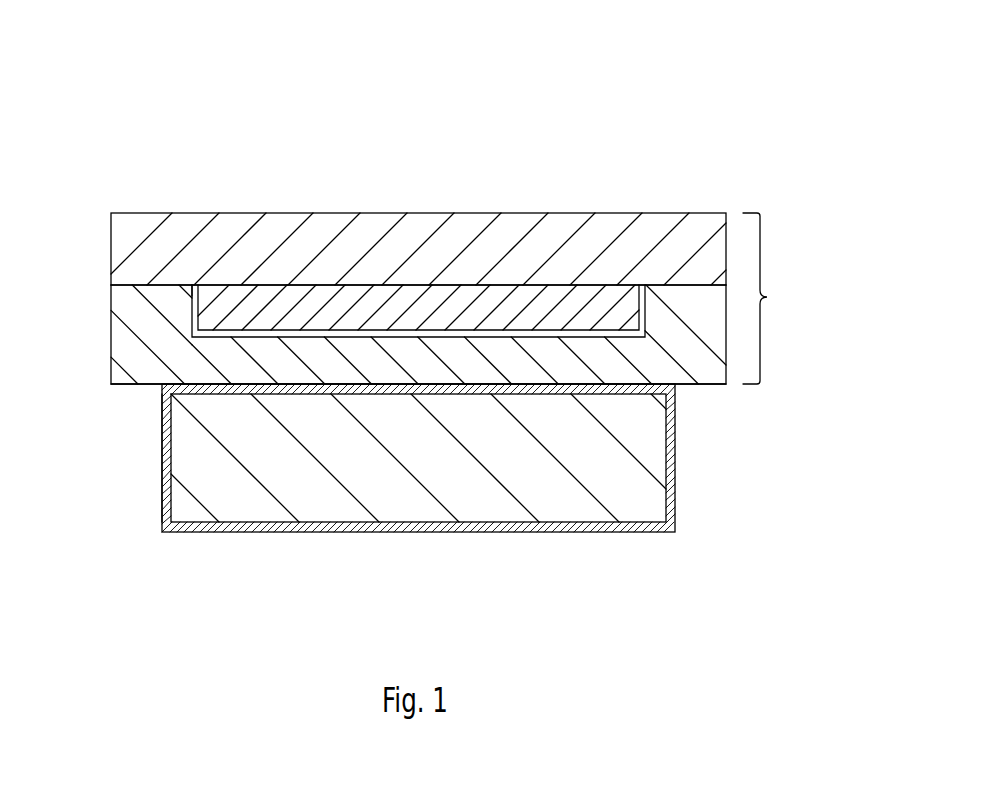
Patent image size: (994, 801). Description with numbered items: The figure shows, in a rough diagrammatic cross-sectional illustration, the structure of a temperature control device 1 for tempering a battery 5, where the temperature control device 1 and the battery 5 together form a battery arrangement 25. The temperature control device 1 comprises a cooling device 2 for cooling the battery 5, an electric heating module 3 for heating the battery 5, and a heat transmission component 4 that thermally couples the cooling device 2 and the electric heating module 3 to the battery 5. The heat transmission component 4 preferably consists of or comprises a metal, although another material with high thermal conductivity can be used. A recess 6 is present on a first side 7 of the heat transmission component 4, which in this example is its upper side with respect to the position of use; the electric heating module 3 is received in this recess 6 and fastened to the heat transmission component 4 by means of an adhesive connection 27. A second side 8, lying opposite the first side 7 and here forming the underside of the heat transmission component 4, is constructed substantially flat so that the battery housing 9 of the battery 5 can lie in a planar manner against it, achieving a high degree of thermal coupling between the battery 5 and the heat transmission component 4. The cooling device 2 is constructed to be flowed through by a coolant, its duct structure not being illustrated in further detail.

The temperature control device 1 is at (768, 297).
The cooling device 2 is at (112, 253).
The electric heating module 3 is at (310, 298).
The heat transmission component 4 is at (118, 335).
The battery 5 is at (690, 453).
The recess 6 is at (415, 333).
The first side 7 is at (145, 285).
The second side 8 is at (135, 388).
The battery housing 9 is at (160, 490).
The battery arrangement 25 is at (758, 170).
The adhesive connection 27 is at (193, 286).